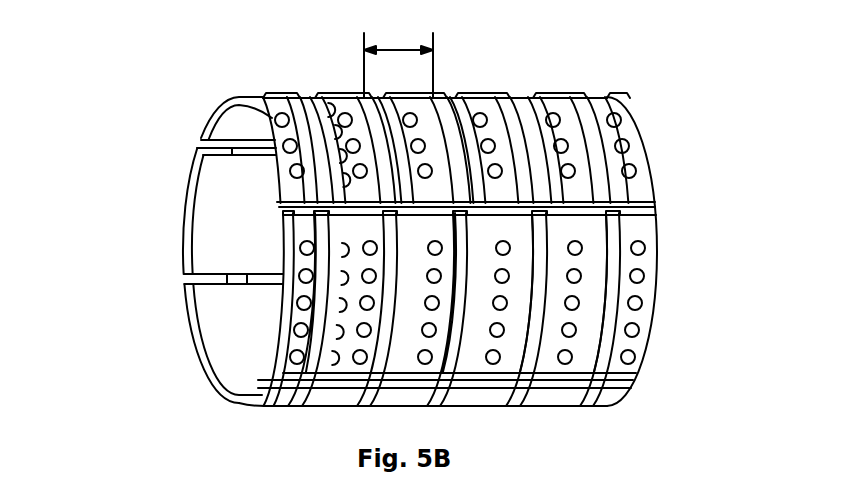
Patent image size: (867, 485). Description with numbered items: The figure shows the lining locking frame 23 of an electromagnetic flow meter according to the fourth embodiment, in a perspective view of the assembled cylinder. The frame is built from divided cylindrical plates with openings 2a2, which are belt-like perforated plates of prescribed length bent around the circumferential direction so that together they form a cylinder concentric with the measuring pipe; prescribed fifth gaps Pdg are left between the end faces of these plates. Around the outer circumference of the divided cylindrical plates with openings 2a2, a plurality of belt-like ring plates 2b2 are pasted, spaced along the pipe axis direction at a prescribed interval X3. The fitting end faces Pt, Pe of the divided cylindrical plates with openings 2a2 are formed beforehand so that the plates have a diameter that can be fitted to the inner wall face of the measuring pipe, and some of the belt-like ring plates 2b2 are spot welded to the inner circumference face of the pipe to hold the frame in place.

The divided cylindrical plate with openings 2a2 is at (186, 199).
The belt-like ring plate 2b2 is at (566, 89).
The lining locking frame 23 is at (342, 65).
The prescribed interval X3 is at (398, 63).
The fifth gap Pdg is at (195, 141).
The fitting end face Pt is at (282, 205).
The fitting end face Pe is at (649, 212).